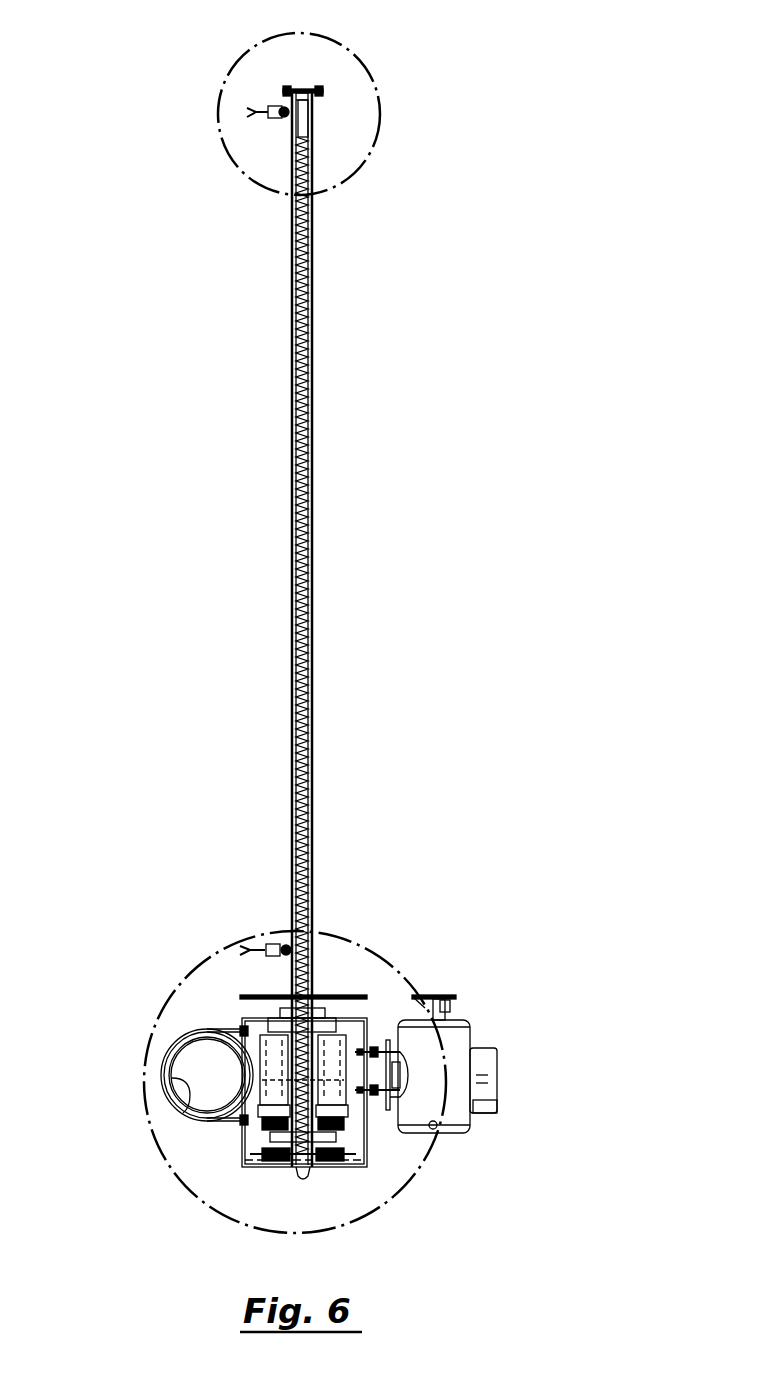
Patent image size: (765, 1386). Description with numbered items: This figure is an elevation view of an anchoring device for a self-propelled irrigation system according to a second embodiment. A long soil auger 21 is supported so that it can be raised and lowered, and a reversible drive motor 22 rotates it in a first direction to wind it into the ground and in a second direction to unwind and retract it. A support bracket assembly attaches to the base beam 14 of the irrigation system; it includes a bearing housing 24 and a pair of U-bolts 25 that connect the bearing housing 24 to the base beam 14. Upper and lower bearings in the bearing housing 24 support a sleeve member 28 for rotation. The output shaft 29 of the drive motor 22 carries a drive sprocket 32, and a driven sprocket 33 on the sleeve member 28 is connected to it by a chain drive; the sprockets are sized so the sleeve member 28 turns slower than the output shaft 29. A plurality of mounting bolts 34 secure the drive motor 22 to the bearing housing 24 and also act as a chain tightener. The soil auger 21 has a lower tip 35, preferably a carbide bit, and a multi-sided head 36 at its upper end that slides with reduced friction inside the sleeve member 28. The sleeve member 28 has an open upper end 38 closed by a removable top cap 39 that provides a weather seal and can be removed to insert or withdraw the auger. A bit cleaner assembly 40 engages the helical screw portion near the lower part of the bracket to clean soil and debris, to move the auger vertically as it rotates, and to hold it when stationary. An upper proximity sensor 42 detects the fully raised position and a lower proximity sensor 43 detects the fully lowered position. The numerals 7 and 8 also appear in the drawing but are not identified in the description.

The clamp lever 7 is at (228, 119).
The ring bore 8 is at (180, 1075).
The base beam 14 is at (185, 1113).
The soil auger 21 is at (292, 456).
The drive motor 22 is at (463, 1040).
The bearing housing 24 is at (243, 1153).
The U-bolts 25 is at (200, 1028).
The sleeve member 28 is at (293, 692).
The output shaft 29 is at (437, 996).
The drive sprocket 32 is at (450, 996).
The driven sprocket 33 is at (345, 995).
The mounting bolts 34 is at (384, 1040).
The lower tip 35 is at (305, 1178).
The multi-sided head 36 is at (310, 127).
The open upper end 38 is at (306, 90).
The top cap 39 is at (296, 90).
The bit cleaner assembly 40 is at (276, 1163).
The upper proximity sensor 42 is at (275, 113).
The lower proximity sensor 43 is at (283, 948).